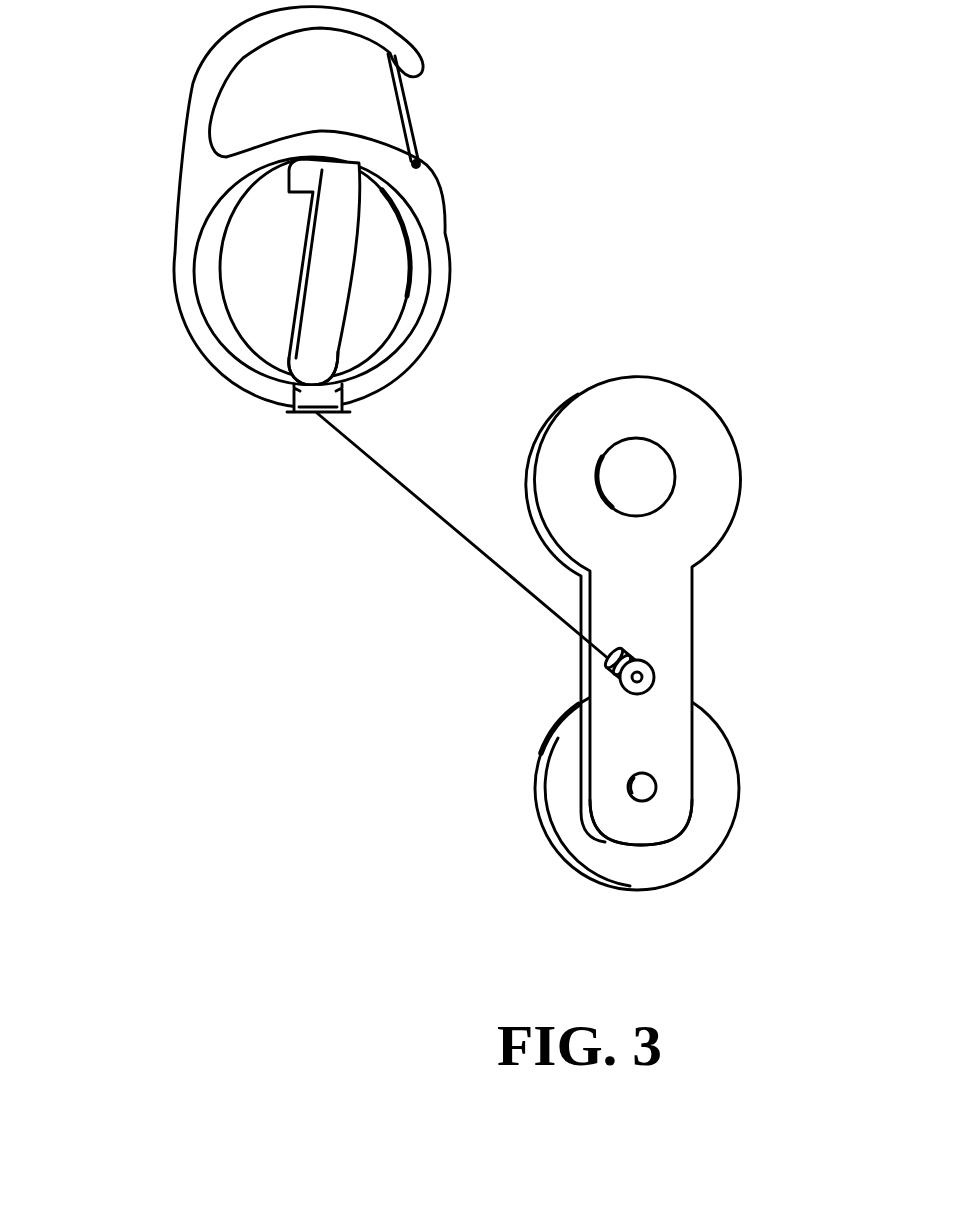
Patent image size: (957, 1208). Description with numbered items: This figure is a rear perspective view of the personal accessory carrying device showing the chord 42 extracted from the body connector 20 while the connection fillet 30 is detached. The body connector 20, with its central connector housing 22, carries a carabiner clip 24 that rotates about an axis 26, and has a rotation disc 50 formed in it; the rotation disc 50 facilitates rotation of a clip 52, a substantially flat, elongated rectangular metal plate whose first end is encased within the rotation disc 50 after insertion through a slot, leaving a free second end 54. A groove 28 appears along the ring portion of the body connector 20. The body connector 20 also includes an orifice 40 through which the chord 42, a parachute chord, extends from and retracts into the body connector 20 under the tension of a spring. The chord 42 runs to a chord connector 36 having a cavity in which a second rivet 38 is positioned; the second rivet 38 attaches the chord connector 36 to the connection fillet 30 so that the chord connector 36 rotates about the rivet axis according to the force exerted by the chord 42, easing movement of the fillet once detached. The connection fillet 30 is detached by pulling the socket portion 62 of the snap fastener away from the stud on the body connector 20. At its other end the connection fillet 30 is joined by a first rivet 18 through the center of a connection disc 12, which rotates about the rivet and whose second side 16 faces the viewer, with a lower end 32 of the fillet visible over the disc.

The connection disc 12 is at (712, 765).
The second side 16 is at (560, 800).
The first rivet 18 is at (658, 789).
The body connector 20 is at (195, 118).
The central connector housing 22 is at (417, 233).
The carabiner clip 24 is at (410, 110).
The axis 26 is at (423, 160).
The ring channel 28 is at (423, 278).
The connection fillet 30 is at (670, 607).
The plate lower end 32 is at (627, 820).
The chord connector 36 is at (640, 657).
The second rivet 38 is at (647, 672).
The orifice 40 is at (308, 430).
The chord 42 is at (380, 463).
The rotation disc 50 is at (240, 250).
The clip 52 is at (337, 220).
The second end 54 is at (317, 357).
The socket portion 62 is at (650, 463).